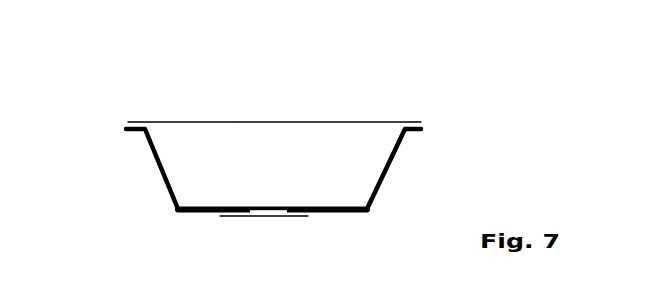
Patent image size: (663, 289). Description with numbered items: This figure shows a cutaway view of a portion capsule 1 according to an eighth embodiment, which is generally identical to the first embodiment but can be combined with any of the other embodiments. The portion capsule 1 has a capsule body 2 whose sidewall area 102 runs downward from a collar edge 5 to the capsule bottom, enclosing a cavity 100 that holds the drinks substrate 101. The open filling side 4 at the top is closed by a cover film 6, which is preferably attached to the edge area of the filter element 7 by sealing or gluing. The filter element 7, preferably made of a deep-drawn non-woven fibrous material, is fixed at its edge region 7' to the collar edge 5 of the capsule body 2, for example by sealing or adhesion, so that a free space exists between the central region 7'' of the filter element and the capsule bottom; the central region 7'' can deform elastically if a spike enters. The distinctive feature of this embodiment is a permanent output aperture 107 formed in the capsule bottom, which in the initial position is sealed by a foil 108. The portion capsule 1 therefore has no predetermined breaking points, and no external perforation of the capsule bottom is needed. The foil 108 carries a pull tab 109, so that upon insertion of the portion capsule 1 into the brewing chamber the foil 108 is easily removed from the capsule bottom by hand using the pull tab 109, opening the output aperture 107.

The portion capsule 1 is at (168, 92).
The capsule body 2 is at (166, 166).
The sidewall area 102 is at (160, 165).
The filling side 4 is at (272, 115).
The collar edge 5 is at (406, 133).
The cover film 6 is at (357, 122).
The filter element 7 is at (390, 190).
The edge region of the filter element 7' is at (141, 162).
The central region of the filter element 7'' is at (311, 122).
The cavity 100 is at (233, 135).
The drinks substrate 101 is at (233, 122).
The output aperture 107 is at (272, 215).
The foil 108 is at (240, 217).
The pull tab 109 is at (308, 216).